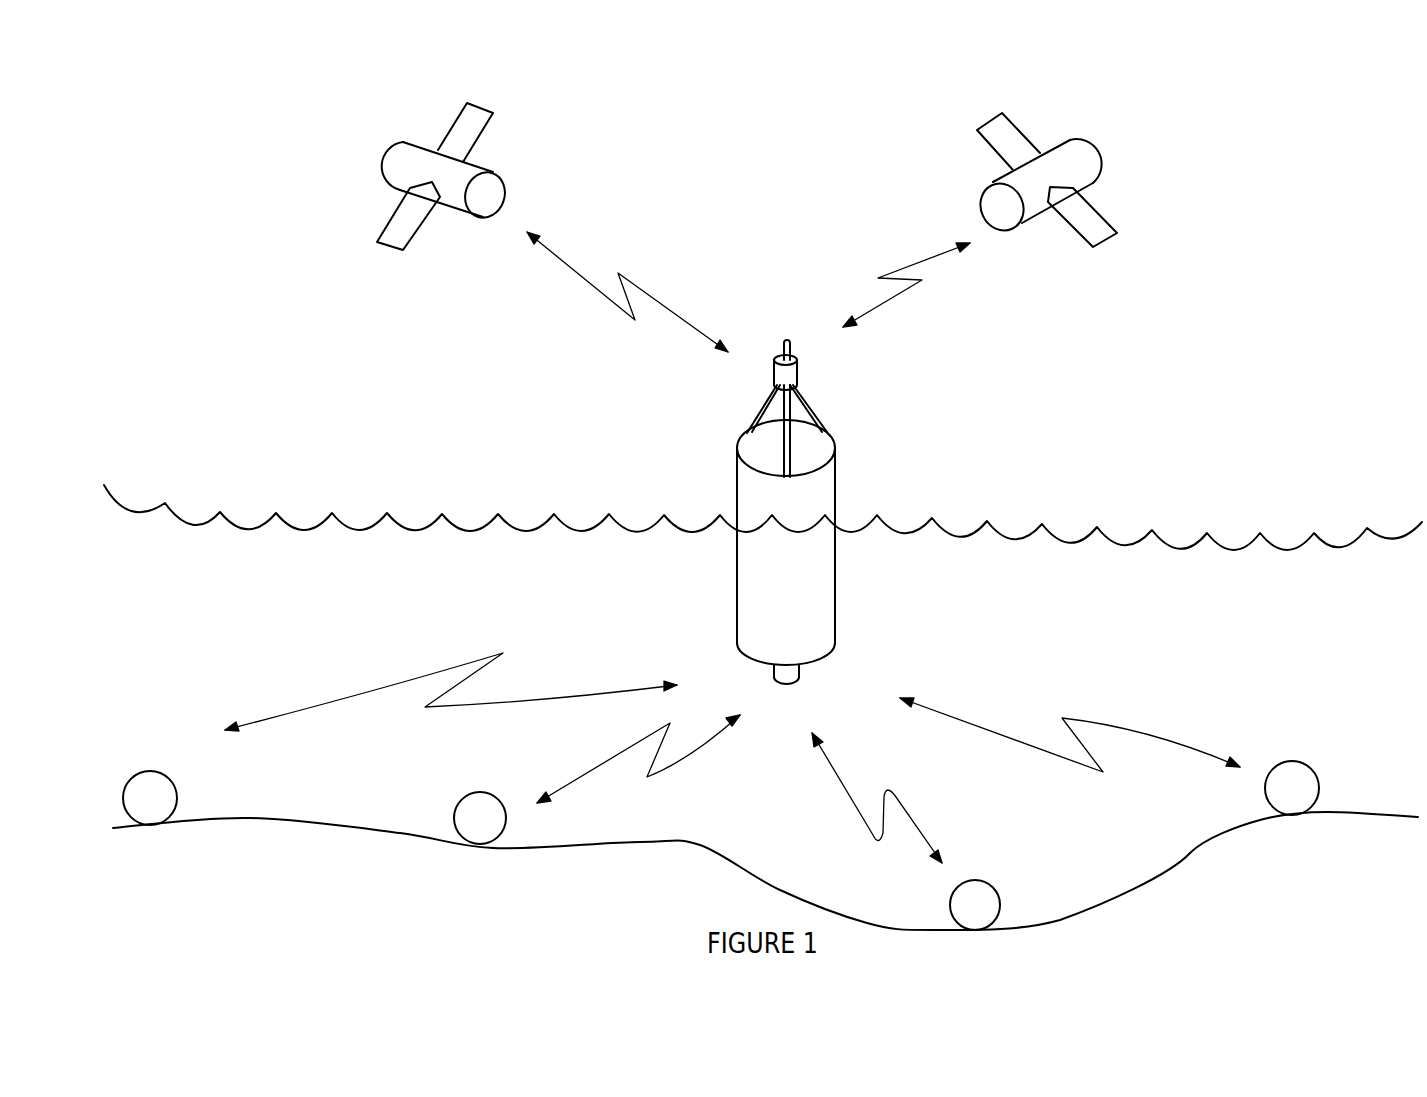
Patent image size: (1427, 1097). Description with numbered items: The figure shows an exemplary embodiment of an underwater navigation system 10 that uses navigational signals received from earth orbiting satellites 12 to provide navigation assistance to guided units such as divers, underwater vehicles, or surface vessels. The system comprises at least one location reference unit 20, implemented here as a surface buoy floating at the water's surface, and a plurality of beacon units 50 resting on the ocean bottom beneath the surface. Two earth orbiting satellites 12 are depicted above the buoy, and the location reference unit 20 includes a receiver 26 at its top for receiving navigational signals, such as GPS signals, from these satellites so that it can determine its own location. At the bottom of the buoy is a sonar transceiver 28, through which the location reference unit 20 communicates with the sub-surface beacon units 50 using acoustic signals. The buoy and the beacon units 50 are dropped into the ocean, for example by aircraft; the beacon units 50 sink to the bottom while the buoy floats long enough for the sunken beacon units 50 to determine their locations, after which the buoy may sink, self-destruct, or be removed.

The underwater navigation system 10 is at (1110, 412).
The earth orbiting satellite 12 is at (505, 178).
The location reference unit 20 is at (720, 442).
The receiver 26 is at (797, 375).
The sonar transceiver 28 is at (800, 677).
The beacon unit 50 is at (150, 772).